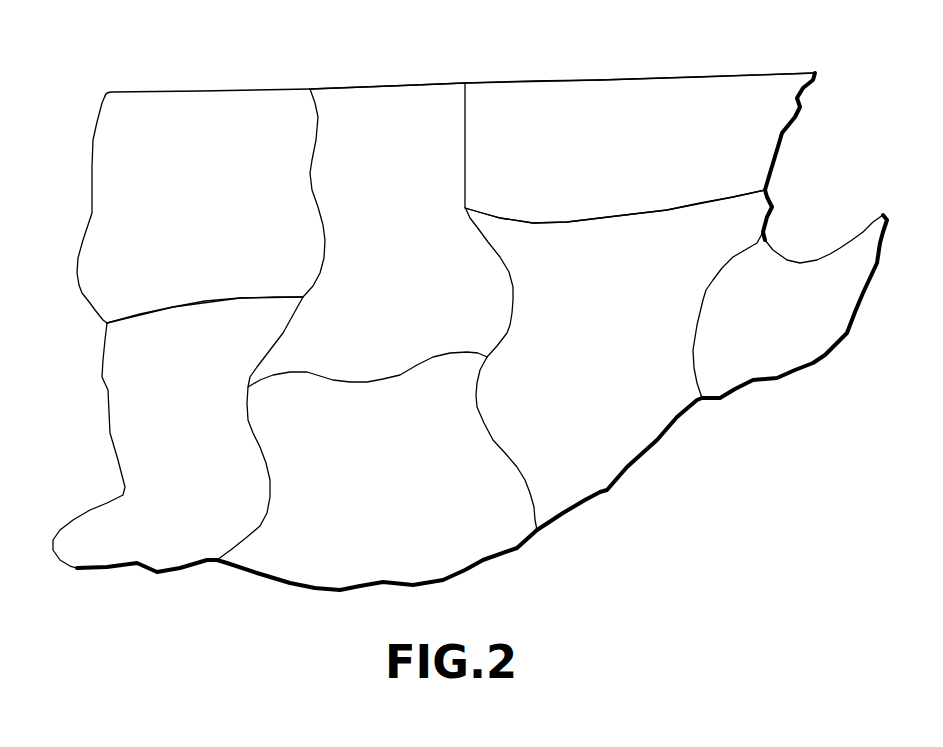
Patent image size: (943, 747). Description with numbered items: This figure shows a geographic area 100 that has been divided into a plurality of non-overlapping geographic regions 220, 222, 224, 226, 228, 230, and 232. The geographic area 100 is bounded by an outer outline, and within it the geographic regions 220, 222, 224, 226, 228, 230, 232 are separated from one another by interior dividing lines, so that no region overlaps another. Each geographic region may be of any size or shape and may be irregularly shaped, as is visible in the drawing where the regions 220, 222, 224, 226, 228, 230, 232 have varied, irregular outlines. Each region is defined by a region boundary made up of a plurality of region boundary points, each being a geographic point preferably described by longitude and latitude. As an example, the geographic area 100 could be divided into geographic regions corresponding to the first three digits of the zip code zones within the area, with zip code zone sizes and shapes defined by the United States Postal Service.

The geographic area 100 is at (647, 73).
The geographic region 220 is at (300, 124).
The geographic region 222 is at (452, 116).
The geographic region 224 is at (770, 109).
The geographic region 226 is at (253, 337).
The geographic region 228 is at (455, 404).
The geographic region 230 is at (745, 234).
The geographic region 232 is at (845, 297).